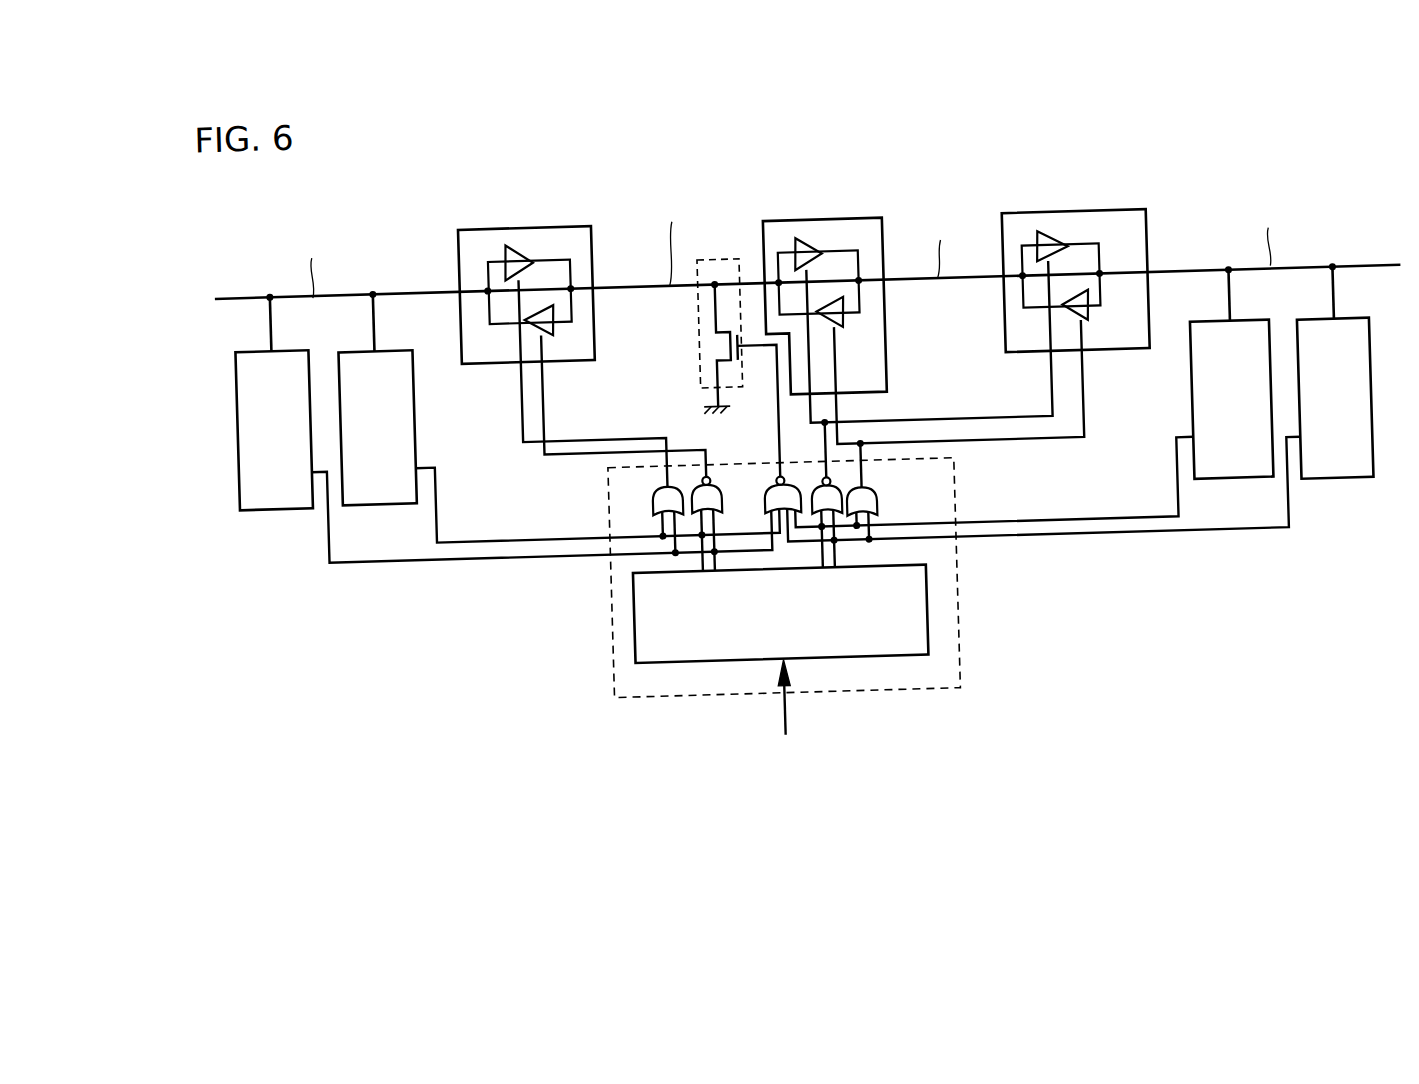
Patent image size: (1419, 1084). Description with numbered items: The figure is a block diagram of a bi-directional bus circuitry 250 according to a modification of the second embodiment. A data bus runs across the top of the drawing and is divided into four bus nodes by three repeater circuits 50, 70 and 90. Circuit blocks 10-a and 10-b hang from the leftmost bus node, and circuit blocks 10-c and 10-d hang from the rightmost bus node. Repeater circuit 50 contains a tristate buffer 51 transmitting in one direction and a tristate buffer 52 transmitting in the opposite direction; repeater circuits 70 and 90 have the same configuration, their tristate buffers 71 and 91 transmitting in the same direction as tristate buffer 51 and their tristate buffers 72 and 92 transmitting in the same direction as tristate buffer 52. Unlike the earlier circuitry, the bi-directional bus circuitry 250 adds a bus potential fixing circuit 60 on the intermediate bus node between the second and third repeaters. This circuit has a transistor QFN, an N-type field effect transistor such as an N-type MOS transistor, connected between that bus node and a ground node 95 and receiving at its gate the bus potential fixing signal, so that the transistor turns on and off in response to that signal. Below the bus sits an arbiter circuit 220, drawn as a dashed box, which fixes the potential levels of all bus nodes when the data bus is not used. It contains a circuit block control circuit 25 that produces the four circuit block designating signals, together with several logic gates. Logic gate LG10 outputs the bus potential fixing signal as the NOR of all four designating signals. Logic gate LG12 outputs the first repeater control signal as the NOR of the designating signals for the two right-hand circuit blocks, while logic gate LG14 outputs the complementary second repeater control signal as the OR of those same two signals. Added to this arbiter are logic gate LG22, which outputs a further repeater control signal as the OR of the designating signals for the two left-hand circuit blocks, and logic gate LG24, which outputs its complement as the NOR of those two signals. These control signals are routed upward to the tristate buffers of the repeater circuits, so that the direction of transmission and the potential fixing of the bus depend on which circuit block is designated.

The bi-directional bus circuitry 250 is at (1356, 172).
The circuit block 10-a is at (272, 496).
The circuit block 10-b is at (380, 494).
The circuit block 10-c is at (1231, 492).
The circuit block 10-d is at (1335, 495).
The repeater circuit 50 is at (523, 225).
The tristate buffer 51 is at (529, 247).
The tristate buffer 52 is at (547, 326).
The bus potential fixing circuit 60 is at (722, 261).
The transistor QFN is at (714, 345).
The ground node 95 is at (713, 380).
The repeater circuit 70 is at (837, 224).
The tristate buffer 71 is at (819, 246).
The tristate buffer 72 is at (840, 328).
The repeater circuit 90 is at (1063, 223).
The tristate buffer 91 is at (1063, 248).
The tristate buffer 92 is at (1092, 323).
The arbiter circuit 220 is at (952, 679).
The circuit block control circuit 25 is at (922, 623).
The logic gate LG10 is at (762, 502).
The logic gate LG12 is at (843, 492).
The logic gate LG14 is at (873, 507).
The logic gate LG22 is at (649, 503).
The logic gate LG24 is at (687, 495).